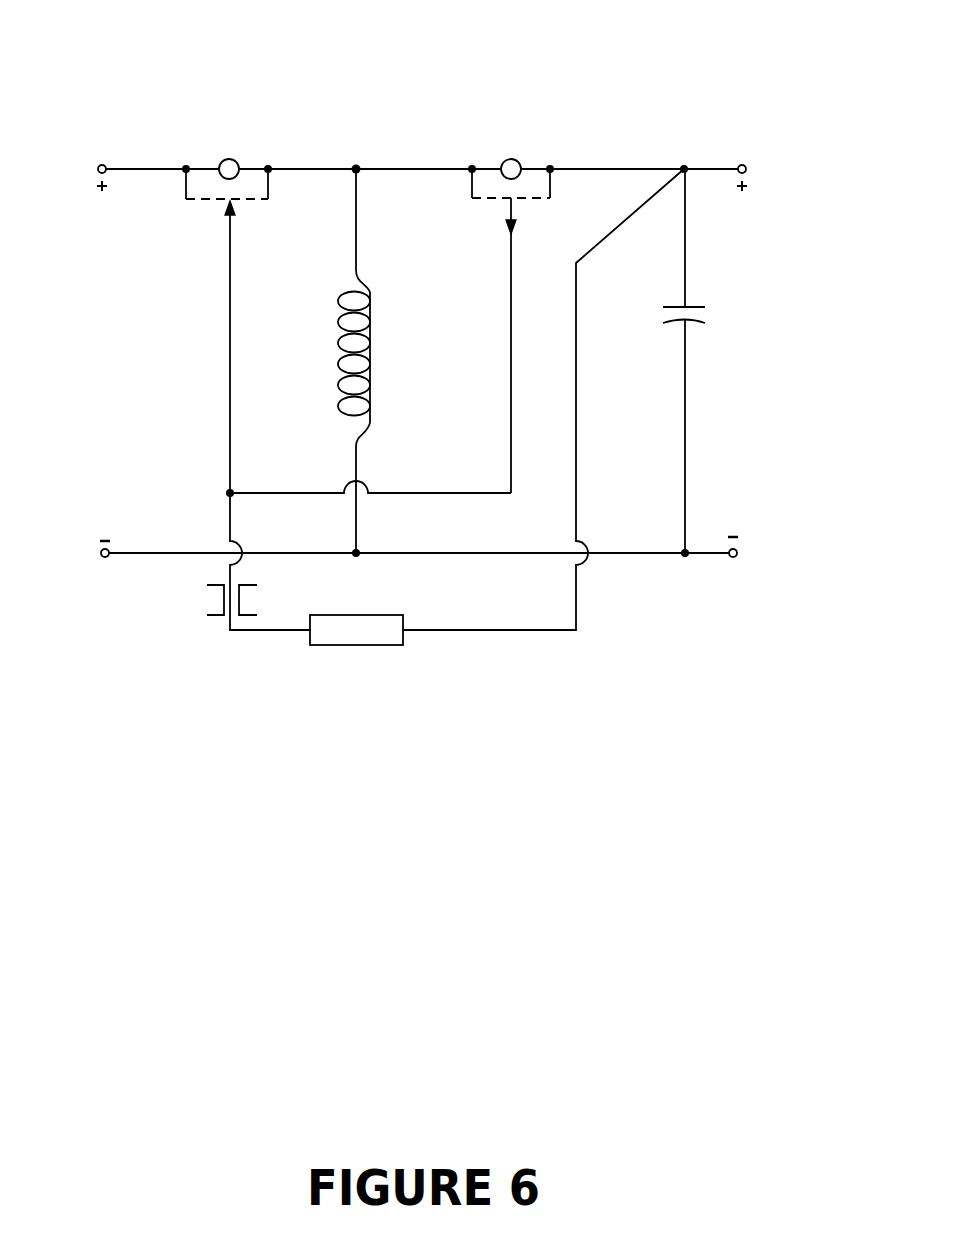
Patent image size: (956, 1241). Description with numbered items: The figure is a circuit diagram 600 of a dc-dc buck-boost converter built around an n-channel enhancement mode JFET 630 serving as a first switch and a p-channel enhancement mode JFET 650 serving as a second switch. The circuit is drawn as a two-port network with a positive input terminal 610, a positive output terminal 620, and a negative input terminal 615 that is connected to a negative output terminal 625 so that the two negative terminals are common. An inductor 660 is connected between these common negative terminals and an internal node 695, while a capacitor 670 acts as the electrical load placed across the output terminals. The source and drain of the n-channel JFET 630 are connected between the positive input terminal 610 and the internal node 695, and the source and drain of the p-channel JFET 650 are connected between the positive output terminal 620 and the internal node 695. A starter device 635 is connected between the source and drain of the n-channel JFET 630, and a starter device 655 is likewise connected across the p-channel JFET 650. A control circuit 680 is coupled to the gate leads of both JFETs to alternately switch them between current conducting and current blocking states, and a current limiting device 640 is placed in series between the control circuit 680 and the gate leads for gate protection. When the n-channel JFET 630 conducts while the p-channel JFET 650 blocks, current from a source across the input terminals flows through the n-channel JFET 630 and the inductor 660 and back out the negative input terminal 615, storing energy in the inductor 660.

The circuit diagram 600 is at (103, 31).
The positive input terminal 610 is at (93, 164).
The negative input terminal 615 is at (99, 554).
The positive output terminal 620 is at (748, 166).
The negative output terminal 625 is at (739, 554).
The n-channel enhancement mode JFET 630 is at (184, 203).
The starter device 635 is at (240, 165).
The current limiting device 640 is at (216, 622).
The p-channel enhancement mode JFET 650 is at (470, 204).
The starter device 655 is at (522, 164).
The inductor 660 is at (378, 398).
The capacitor 670 is at (707, 316).
The control circuit 680 is at (338, 639).
The internal node 695 is at (358, 165).